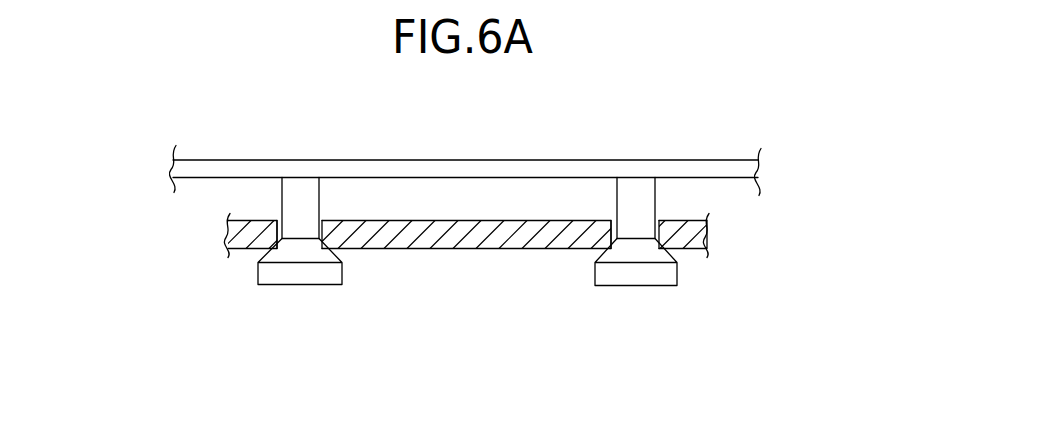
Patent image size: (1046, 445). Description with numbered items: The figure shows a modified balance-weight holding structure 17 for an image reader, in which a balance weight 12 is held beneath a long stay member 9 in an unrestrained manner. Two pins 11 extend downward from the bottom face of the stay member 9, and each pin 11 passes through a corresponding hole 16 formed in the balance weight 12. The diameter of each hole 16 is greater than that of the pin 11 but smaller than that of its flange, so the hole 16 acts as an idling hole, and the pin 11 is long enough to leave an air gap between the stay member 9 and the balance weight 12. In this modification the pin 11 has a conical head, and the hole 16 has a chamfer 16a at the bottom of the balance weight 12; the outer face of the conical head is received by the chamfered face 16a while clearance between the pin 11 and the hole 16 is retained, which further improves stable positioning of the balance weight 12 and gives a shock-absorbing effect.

The stay member 9 is at (548, 162).
The pin 11 is at (298, 284).
The balance weight 12 is at (473, 248).
The hole 16 is at (657, 209).
The chamfer 16a is at (610, 244).
The balance-weight holding structure 17 is at (750, 262).